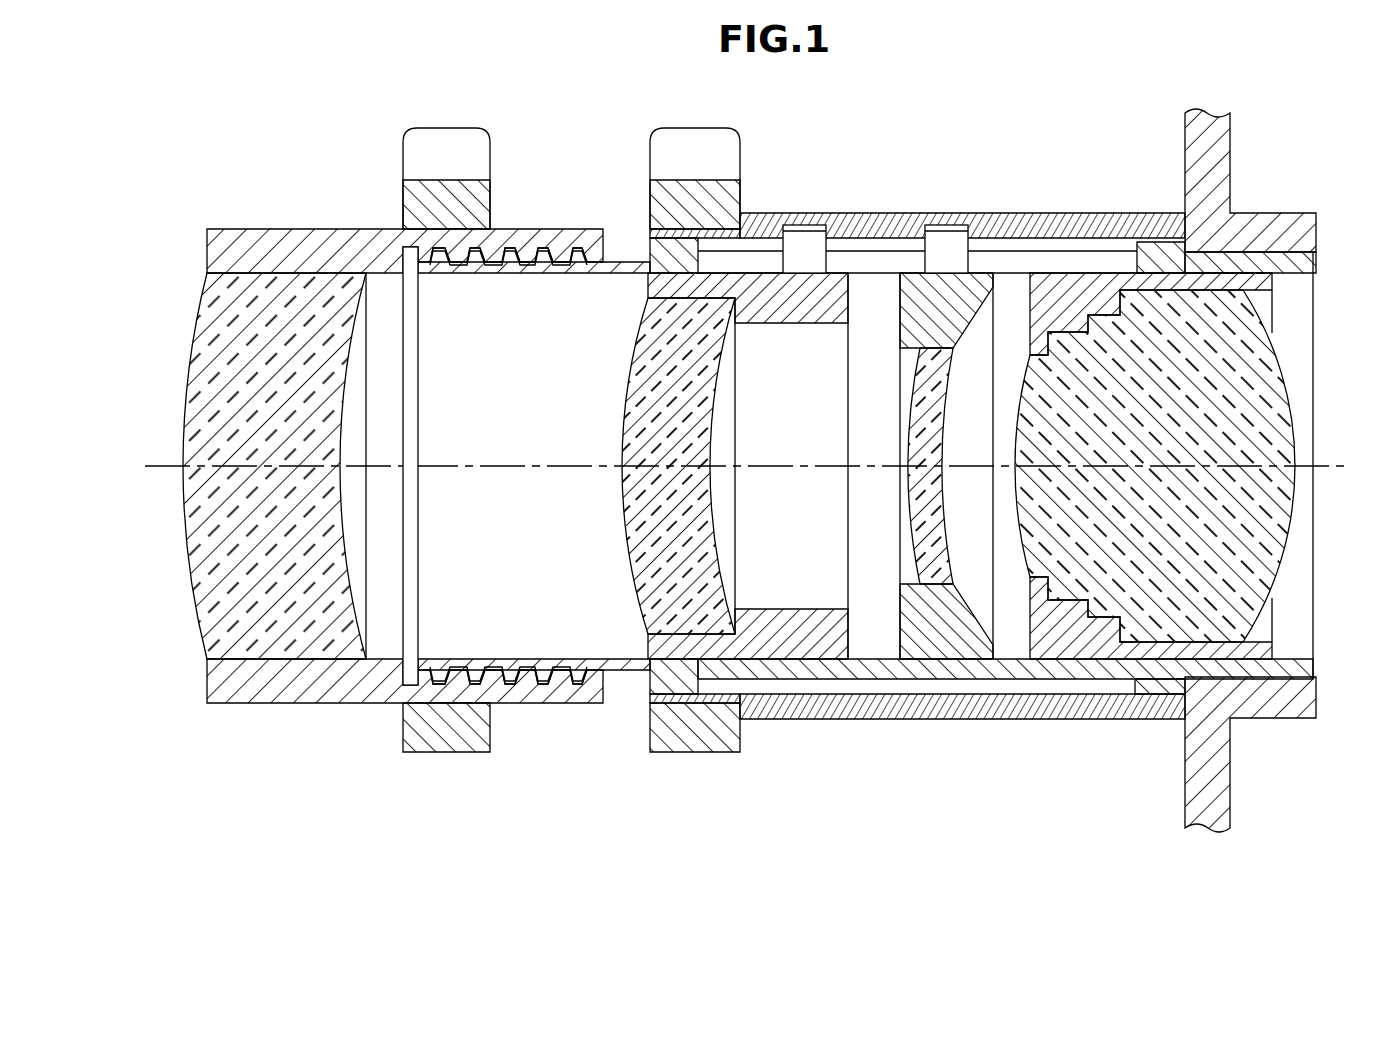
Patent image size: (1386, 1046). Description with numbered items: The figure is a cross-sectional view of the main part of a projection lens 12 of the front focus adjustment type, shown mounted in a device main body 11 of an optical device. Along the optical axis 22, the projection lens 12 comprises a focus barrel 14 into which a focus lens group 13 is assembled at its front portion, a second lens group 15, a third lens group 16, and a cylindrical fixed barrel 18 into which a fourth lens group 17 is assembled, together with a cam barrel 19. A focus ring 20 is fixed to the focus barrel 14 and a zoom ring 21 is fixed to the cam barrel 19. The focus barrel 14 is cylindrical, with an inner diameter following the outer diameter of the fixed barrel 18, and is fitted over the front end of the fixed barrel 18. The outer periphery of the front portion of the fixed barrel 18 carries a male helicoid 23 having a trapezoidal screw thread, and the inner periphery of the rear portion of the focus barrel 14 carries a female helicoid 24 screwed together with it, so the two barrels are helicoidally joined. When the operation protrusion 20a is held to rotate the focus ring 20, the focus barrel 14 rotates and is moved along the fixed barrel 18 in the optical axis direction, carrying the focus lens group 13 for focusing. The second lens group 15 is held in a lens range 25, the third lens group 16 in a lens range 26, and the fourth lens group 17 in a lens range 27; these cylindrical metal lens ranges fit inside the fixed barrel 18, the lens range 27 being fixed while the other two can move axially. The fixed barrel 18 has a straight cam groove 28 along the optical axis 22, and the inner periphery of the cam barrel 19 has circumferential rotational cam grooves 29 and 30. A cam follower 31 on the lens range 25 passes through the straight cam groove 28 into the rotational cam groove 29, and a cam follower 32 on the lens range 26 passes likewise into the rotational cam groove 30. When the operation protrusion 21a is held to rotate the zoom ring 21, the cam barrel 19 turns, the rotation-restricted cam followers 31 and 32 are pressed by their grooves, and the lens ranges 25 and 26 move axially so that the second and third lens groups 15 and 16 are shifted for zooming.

The device main body 11 is at (1186, 165).
The projection lens 12 is at (981, 205).
The focus lens group 13 is at (293, 649).
The focus barrel 14 is at (268, 240).
The second lens group 15 is at (630, 538).
The third lens group 16 is at (912, 521).
The fourth lens group 17 is at (1290, 513).
The fixed barrel 18 is at (630, 267).
The cam barrel 19 is at (1111, 215).
The focus ring 20 is at (405, 207).
The operation protrusion 20a is at (452, 128).
The zoom ring 21 is at (743, 190).
The operation protrusion 21a is at (697, 128).
The optical axis 22 is at (490, 470).
The male helicoid 23 is at (545, 278).
The female helicoid 24 is at (470, 257).
The lens range 25 is at (786, 647).
The lens range 26 is at (940, 647).
The lens range 27 is at (1087, 646).
The straight cam groove 28 is at (1053, 255).
The rotational cam groove 29 is at (793, 232).
The rotational cam groove 30 is at (931, 232).
The cam follower 31 is at (813, 250).
The cam follower 32 is at (951, 250).